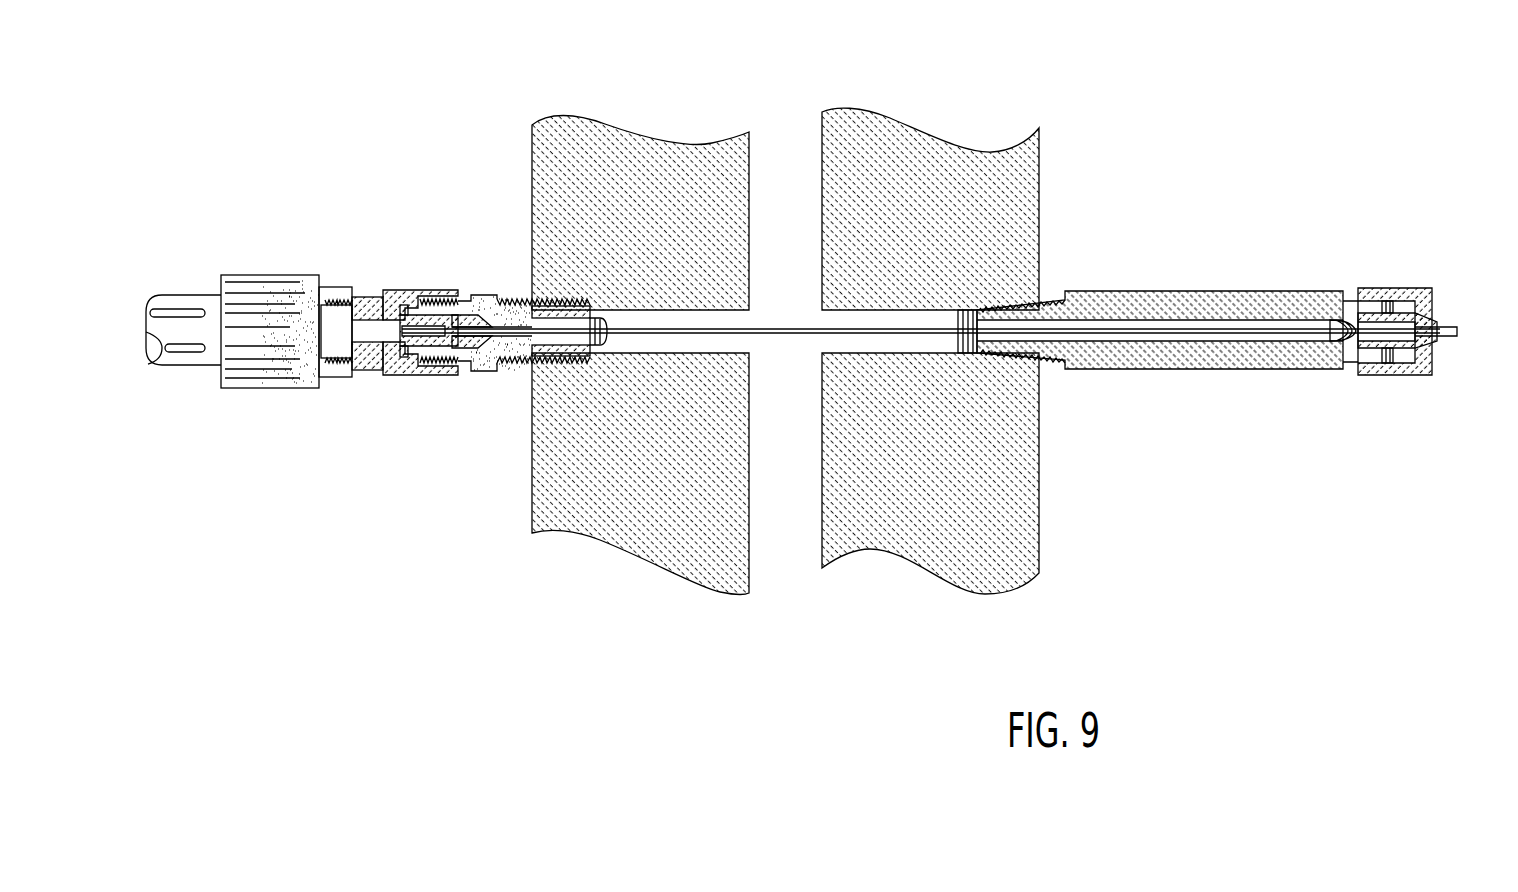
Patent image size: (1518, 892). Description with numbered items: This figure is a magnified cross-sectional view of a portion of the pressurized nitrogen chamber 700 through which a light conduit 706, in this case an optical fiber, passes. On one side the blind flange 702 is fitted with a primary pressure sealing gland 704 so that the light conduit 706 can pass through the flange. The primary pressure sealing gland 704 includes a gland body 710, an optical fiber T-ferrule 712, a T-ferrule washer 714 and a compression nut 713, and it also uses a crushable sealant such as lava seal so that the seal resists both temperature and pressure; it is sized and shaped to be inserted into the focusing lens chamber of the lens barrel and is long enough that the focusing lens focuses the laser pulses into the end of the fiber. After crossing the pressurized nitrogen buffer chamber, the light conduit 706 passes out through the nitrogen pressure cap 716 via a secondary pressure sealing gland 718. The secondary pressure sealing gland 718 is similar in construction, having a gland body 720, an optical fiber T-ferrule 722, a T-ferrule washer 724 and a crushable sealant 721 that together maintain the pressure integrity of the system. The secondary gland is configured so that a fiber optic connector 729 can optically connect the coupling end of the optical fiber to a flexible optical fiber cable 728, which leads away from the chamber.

The pressurized nitrogen chamber 700 is at (787, 542).
The blind flange 702 is at (917, 155).
The primary pressure sealing gland 704 is at (1432, 383).
The light conduit 706 is at (762, 330).
The gland body 710 is at (1135, 292).
The optical fiber T-ferrule 712 is at (1387, 290).
The compression nut 713 is at (1427, 363).
The T-ferrule washer 714 is at (1417, 305).
The nitrogen pressure cap 716 is at (577, 160).
The secondary pressure sealing gland 718 is at (530, 378).
The gland body 720 is at (480, 296).
The crushable sealant 721 is at (475, 311).
The optical fiber T-ferrule 722 is at (438, 318).
The T-ferrule washer 724 is at (395, 290).
The flexible optical fiber cable 728 is at (162, 360).
The fiber optic connector 729 is at (250, 285).